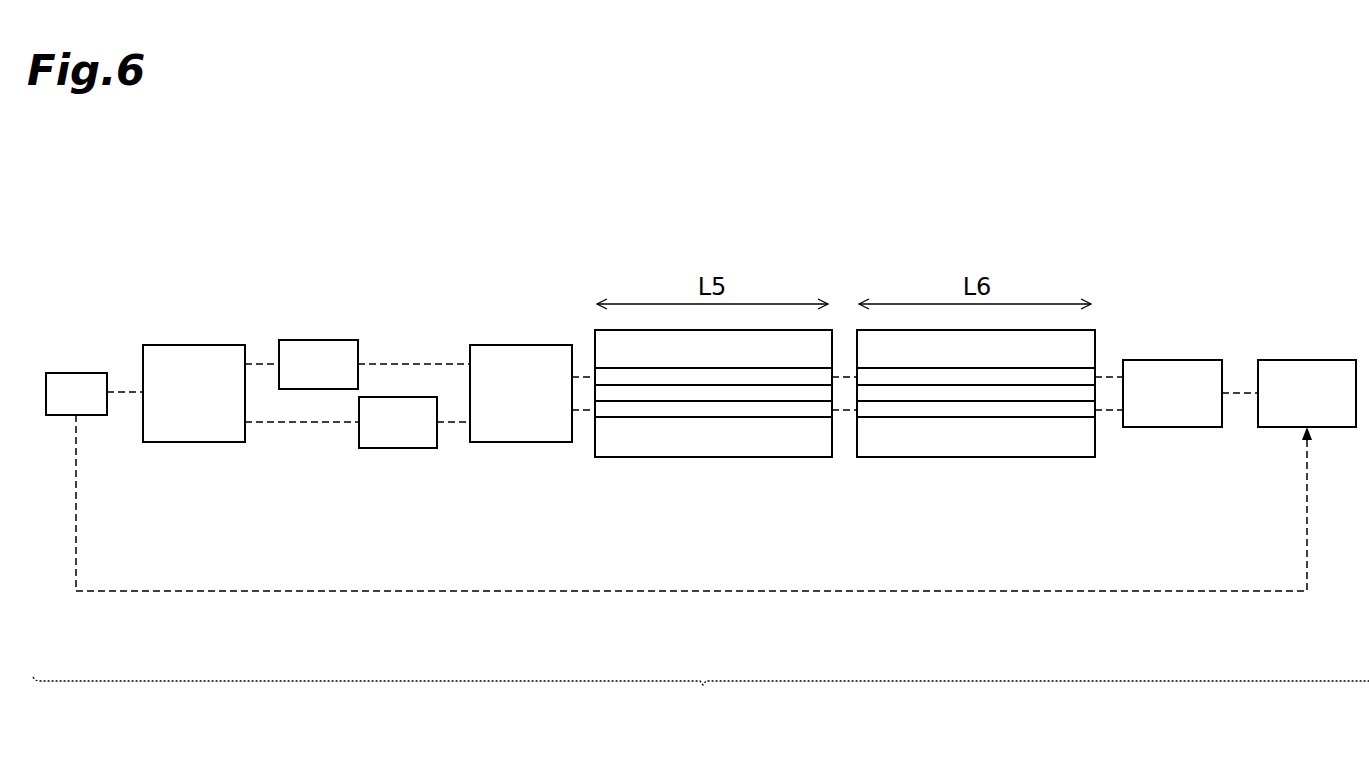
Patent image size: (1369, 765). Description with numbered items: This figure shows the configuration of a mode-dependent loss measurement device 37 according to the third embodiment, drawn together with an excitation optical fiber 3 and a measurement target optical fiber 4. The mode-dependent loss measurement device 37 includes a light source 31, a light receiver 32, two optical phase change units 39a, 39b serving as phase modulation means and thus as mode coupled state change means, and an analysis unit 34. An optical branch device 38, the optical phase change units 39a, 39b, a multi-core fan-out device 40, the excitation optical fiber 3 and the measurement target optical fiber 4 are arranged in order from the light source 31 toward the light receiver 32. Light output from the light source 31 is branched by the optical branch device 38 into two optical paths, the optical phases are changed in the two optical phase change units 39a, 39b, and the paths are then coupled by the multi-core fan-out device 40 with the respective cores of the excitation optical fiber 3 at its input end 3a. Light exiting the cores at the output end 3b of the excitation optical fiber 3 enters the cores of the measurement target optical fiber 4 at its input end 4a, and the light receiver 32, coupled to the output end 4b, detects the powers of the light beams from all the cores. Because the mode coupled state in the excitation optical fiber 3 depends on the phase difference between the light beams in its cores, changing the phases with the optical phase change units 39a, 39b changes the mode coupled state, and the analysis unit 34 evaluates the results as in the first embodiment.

The light source 31 is at (76, 373).
The optical branch device 38 is at (194, 345).
The optical phase change unit 39a is at (320, 340).
The optical phase change unit 39b is at (399, 397).
The multi-core fan-out device 40 is at (521, 345).
The excitation optical fiber 3 is at (712, 458).
The input end of excitation optical fiber 3a is at (595, 455).
The output end of excitation optical fiber 3b is at (832, 455).
The measurement target optical fiber 4 is at (975, 458).
The input end of measurement target optical fiber 4a is at (857, 455).
The output end of measurement target optical fiber 4b is at (1095, 455).
The light receiver 32 is at (1169, 360).
The analysis unit 34 is at (1300, 360).
The mode-dependent loss measurement device 37 is at (1054, 240).